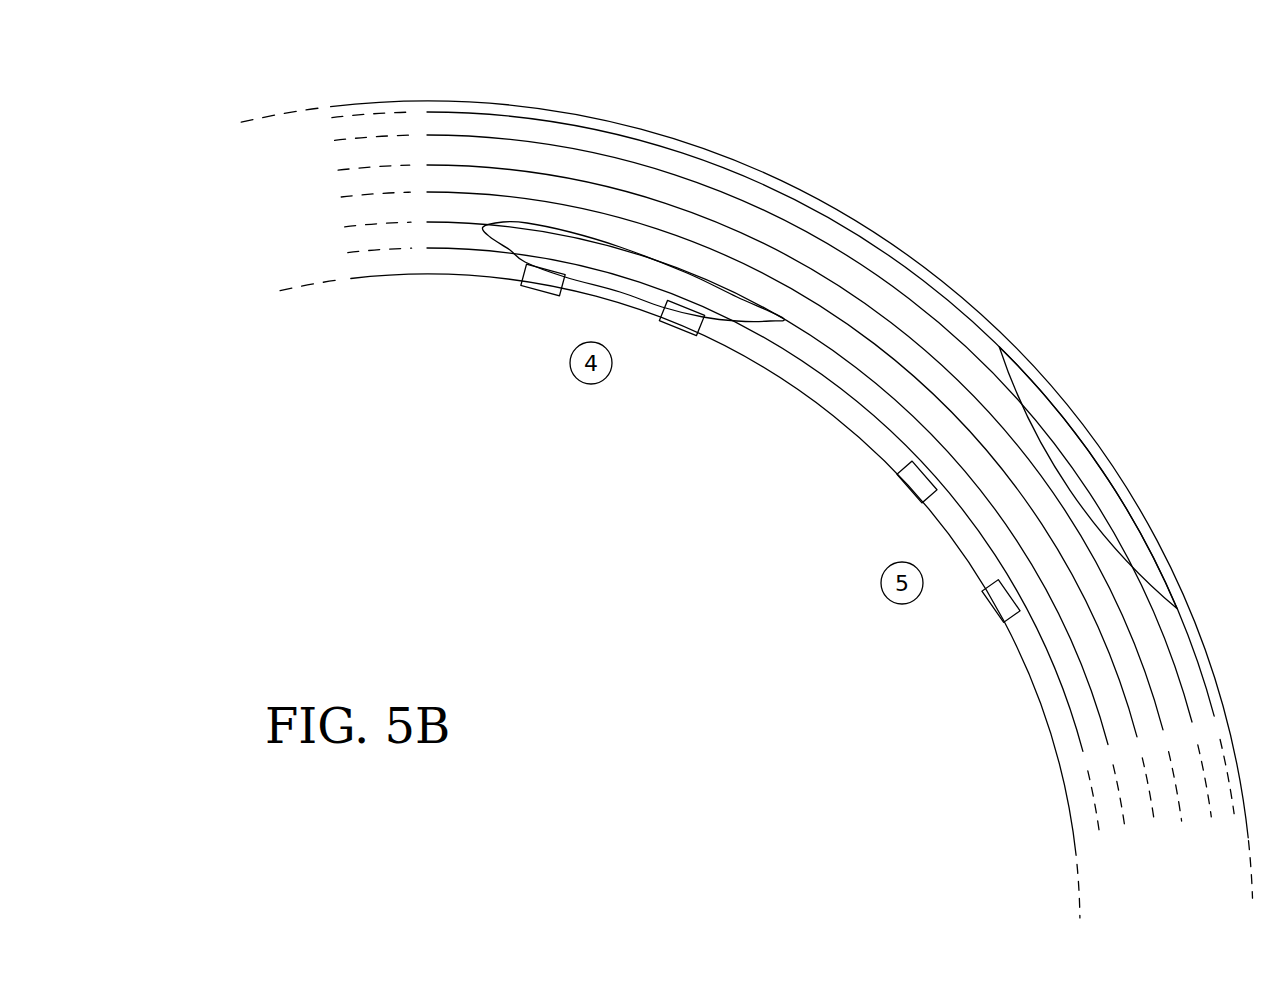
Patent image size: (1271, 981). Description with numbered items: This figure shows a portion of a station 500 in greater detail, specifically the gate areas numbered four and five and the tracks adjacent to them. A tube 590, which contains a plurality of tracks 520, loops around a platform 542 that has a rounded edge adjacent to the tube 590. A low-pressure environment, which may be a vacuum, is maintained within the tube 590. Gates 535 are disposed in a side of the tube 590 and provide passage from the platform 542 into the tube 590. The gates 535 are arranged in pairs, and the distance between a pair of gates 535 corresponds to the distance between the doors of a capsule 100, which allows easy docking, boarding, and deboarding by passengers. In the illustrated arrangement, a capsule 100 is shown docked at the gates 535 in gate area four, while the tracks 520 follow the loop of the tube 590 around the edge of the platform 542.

The station 500 is at (1106, 259).
The tube 590 is at (590, 108).
The capsule 100 is at (650, 257).
The tracks 520 is at (795, 375).
The gates 535 is at (542, 290).
The platform 542 is at (481, 518).